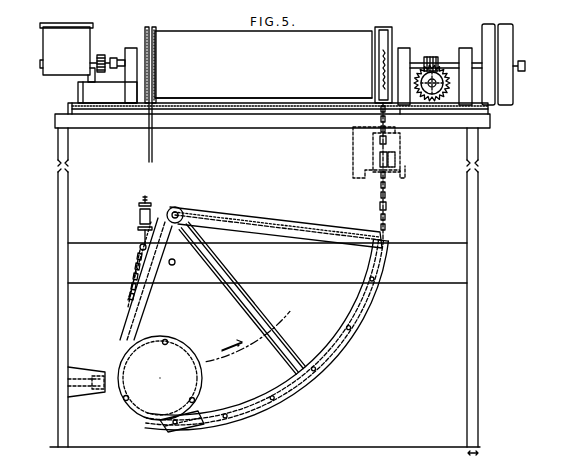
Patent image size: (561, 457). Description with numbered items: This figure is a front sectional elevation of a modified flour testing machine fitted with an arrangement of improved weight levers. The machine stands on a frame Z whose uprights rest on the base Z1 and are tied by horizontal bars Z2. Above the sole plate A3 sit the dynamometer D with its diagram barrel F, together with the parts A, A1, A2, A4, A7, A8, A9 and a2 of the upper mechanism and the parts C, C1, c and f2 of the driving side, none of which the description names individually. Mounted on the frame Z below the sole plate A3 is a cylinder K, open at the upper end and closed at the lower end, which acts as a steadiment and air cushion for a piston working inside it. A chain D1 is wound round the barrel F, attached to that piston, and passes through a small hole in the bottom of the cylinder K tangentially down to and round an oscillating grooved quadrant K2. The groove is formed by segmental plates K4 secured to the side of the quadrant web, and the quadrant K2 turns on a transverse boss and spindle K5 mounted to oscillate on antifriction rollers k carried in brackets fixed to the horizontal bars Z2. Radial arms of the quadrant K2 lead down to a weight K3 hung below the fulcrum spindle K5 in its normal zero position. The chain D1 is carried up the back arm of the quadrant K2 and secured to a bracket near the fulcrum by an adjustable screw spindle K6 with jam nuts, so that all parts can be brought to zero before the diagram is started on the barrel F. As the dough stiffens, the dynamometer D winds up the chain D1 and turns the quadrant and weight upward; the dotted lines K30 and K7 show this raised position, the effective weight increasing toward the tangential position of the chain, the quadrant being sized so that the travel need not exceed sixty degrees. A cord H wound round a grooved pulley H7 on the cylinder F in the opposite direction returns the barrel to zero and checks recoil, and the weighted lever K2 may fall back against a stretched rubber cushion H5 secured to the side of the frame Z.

The tank A is at (66, 49).
The tank support bracket A1 is at (88, 80).
The bracket base A2 is at (107, 92).
The sole plate A3 is at (278, 115).
The bed plate bracket A4 is at (410, 109).
The end plate A7 is at (133, 48).
The bearing standard A8 is at (405, 55).
The bearing standard A9 is at (468, 55).
The small gear a2 is at (100, 54).
The shaft C is at (532, 64).
The drive pulleys C1 is at (497, 64).
The pinion c is at (430, 57).
The dynamometer D is at (383, 65).
The chain D1 is at (372, 140).
The barrel F is at (263, 64).
The cord H is at (152, 148).
The rubber cushion H5 is at (80, 367).
The grooved pulley H7 is at (152, 55).
The cylinder K is at (395, 159).
The antifriction rollers k is at (126, 240).
The grooved quadrant K2 is at (210, 236).
The weight K3 is at (160, 378).
The raised weight position K30 is at (196, 375).
The segmental plates K4 is at (365, 300).
The spindle K5 is at (180, 210).
The screw spindle K6 is at (152, 200).
The raised quadrant position K7 is at (246, 298).
The ratchet wheel f2 is at (433, 100).
The frame Z is at (308, 280).
The base Z1 is at (560, 446).
The horizontal bars Z2 is at (267, 263).